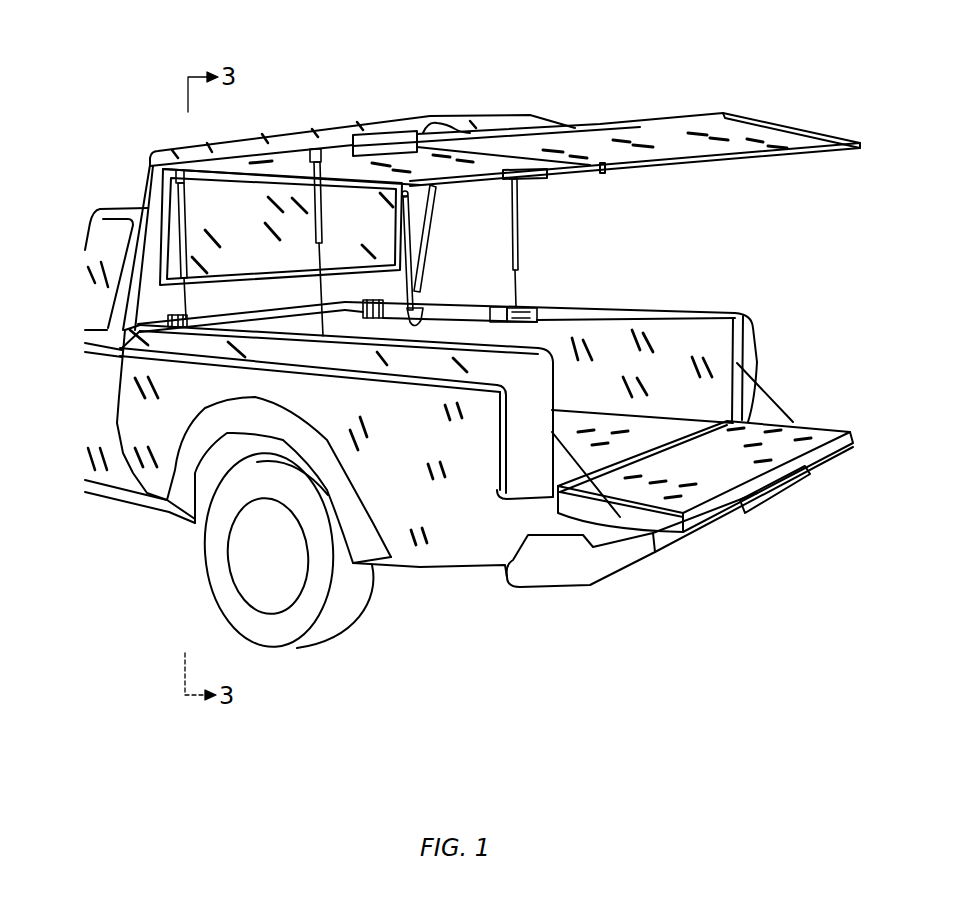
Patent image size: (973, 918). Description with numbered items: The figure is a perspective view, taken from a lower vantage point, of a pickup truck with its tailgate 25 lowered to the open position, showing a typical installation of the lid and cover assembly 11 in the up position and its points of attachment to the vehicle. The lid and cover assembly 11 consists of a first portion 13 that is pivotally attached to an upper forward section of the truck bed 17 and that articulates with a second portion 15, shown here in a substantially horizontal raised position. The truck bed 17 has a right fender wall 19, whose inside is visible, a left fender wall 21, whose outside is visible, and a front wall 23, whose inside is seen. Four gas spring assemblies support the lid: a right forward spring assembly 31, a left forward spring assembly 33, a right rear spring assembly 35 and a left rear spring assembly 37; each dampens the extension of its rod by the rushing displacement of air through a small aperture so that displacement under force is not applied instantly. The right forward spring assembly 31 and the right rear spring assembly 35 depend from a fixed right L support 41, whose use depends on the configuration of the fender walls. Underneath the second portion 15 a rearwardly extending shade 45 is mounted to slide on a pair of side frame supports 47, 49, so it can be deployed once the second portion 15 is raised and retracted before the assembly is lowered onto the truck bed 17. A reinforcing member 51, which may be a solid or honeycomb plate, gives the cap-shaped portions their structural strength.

The lid and cover assembly 11 is at (690, 58).
The first portion 13 is at (147, 186).
The second portion 15 is at (298, 127).
The truck bed 17 is at (147, 535).
The right fender wall 19 is at (693, 337).
The left fender wall 21 is at (477, 500).
The front wall 23 is at (354, 336).
The tailgate 25 is at (733, 472).
The right forward spring assembly 31 is at (412, 219).
The left forward spring assembly 33 is at (184, 220).
The right rear spring assembly 35 is at (516, 204).
The left rear spring assembly 37 is at (319, 238).
The right L support 41 is at (484, 301).
The rearwardly extending shade 45 is at (863, 150).
The side frame support 47 is at (397, 138).
The side frame support 49 is at (600, 174).
The reinforcing member 51 is at (272, 256).